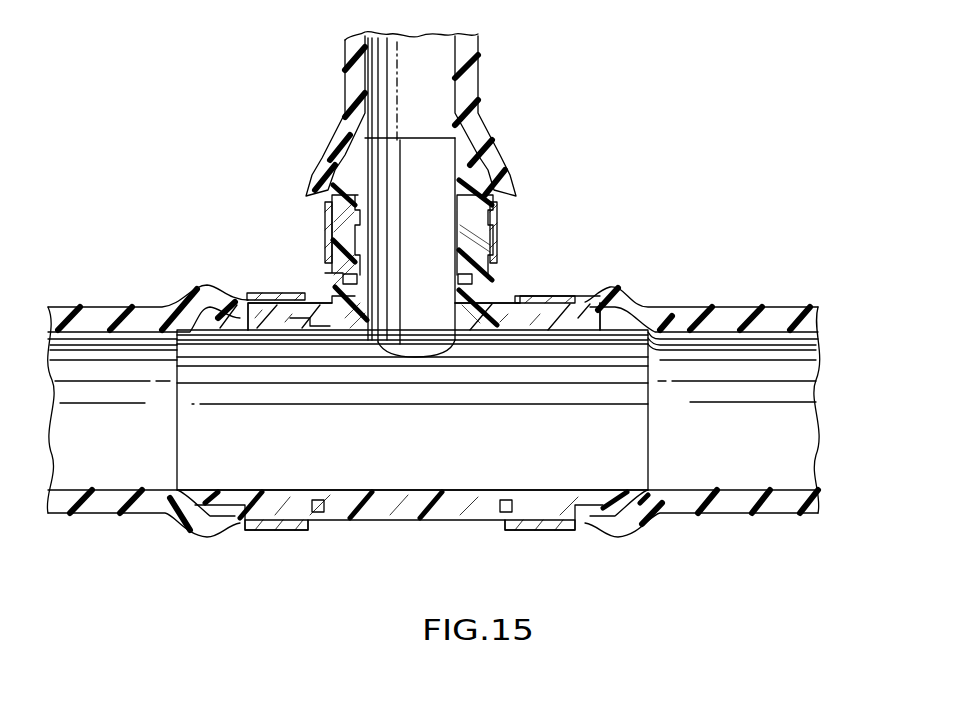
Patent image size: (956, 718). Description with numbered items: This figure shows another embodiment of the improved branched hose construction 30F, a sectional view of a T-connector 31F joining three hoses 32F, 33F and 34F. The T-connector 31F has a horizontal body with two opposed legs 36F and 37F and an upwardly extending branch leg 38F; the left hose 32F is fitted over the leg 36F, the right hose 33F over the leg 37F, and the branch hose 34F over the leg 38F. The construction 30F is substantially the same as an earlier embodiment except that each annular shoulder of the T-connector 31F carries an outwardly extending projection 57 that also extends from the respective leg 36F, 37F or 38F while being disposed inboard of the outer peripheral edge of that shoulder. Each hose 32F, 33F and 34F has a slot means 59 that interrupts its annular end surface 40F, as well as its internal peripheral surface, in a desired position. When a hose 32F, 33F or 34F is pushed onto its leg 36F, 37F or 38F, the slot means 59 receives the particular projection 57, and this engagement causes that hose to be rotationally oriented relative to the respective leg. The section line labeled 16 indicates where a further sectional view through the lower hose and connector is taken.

The branched hose construction 30F is at (595, 224).
The T-connector 31F is at (446, 526).
The hose 32F is at (107, 263).
The hose 33F is at (745, 307).
The hose 34F is at (480, 52).
The leg 36F is at (240, 303).
The leg 37F is at (580, 312).
The leg 38F is at (348, 181).
The annular end surface 40F is at (345, 288).
The projection 57 is at (336, 292).
The slot means 59 is at (357, 279).
The section line 16- 16 is at (282, 578).